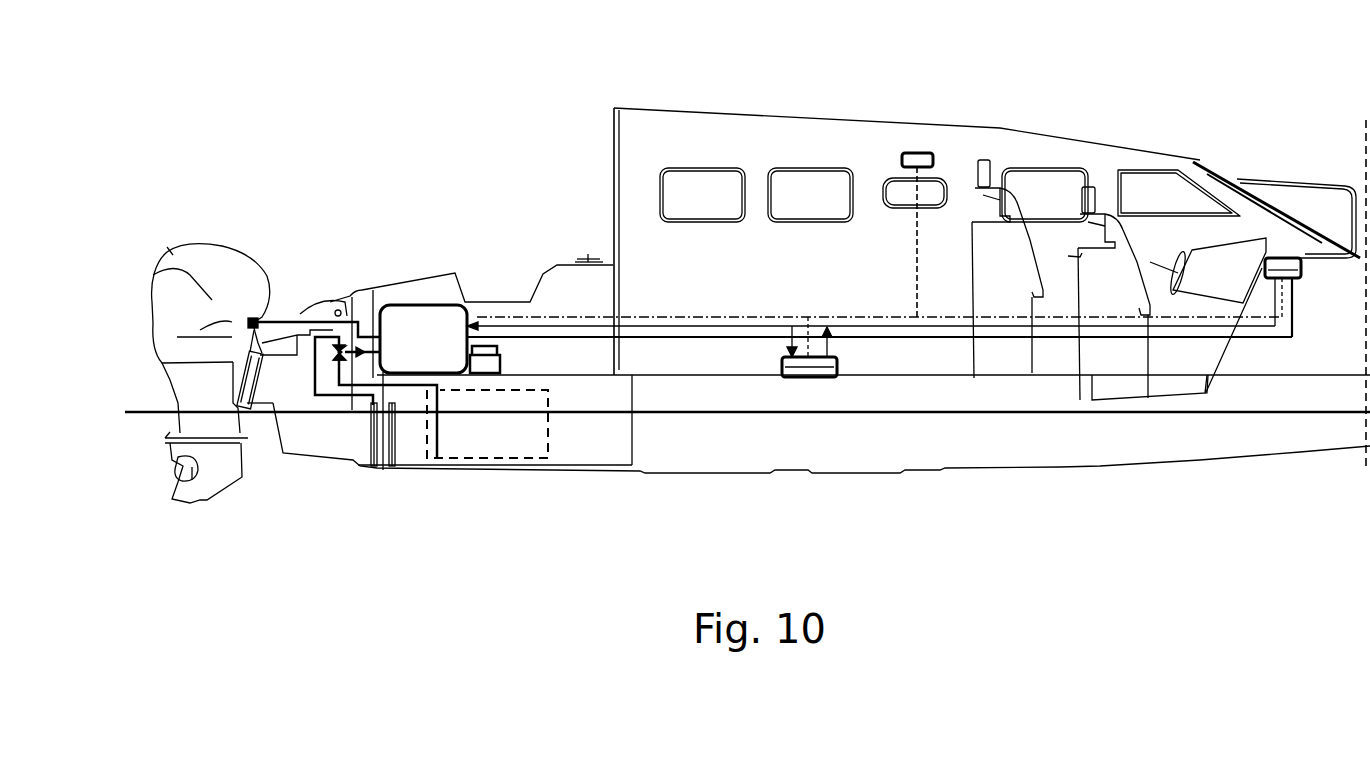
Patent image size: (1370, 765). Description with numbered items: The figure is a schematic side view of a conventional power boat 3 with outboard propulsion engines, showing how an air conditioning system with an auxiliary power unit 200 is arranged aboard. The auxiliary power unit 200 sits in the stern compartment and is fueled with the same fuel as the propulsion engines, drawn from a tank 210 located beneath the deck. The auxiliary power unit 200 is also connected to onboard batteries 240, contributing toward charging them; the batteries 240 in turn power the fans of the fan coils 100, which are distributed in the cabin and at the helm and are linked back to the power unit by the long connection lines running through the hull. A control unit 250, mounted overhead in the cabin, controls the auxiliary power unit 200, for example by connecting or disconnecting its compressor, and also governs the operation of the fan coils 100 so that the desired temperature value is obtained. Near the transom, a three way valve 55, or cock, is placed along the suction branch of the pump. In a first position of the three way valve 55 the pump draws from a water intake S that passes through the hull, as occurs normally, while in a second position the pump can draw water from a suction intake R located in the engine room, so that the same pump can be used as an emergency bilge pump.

The power boat 3 is at (747, 273).
The auxiliary power unit 200 is at (417, 330).
The onboard batteries 240 is at (512, 366).
The three way valve 55 is at (330, 363).
The water intake S is at (377, 468).
The suction intake R is at (397, 468).
The tank 210 is at (513, 450).
The control unit 250 is at (913, 157).
The fan coils 100 is at (782, 368).